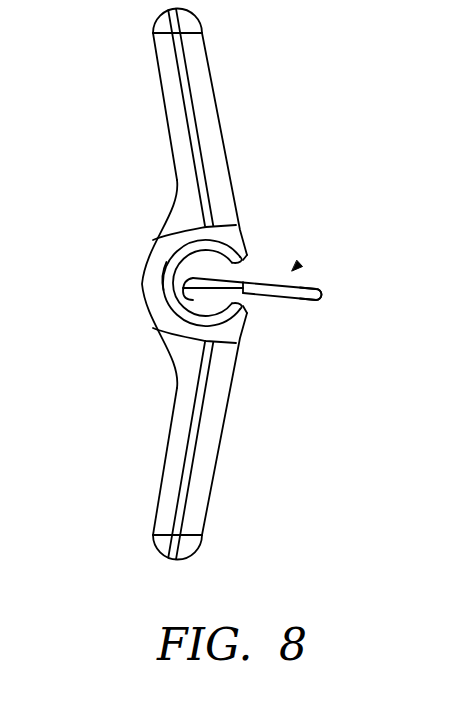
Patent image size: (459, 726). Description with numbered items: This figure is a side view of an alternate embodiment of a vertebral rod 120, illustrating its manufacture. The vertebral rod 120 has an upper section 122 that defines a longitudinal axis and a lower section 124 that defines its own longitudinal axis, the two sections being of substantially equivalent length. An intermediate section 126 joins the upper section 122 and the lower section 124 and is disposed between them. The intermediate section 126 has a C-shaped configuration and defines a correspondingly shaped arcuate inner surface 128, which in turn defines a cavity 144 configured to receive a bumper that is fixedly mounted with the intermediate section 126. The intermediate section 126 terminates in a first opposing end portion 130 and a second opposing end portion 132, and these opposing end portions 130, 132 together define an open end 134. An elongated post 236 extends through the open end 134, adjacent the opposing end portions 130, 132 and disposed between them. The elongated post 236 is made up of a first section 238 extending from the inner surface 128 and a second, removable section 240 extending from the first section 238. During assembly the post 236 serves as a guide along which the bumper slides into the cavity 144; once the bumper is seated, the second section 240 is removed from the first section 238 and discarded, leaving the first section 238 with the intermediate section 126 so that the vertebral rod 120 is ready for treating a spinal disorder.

The vertebral rod 120 is at (55, 165).
The upper section 122 is at (177, 80).
The lower section 124 is at (175, 473).
The intermediate section 126 is at (147, 262).
The arcuate inner surface 128 is at (162, 330).
The first opposing end portion 130 is at (250, 258).
The second opposing end portion 132 is at (244, 300).
The open end 134 is at (240, 300).
The cavity 144 is at (190, 301).
The elongated post 236 is at (298, 266).
The first section 238 is at (170, 277).
The second removable section 240 is at (286, 297).